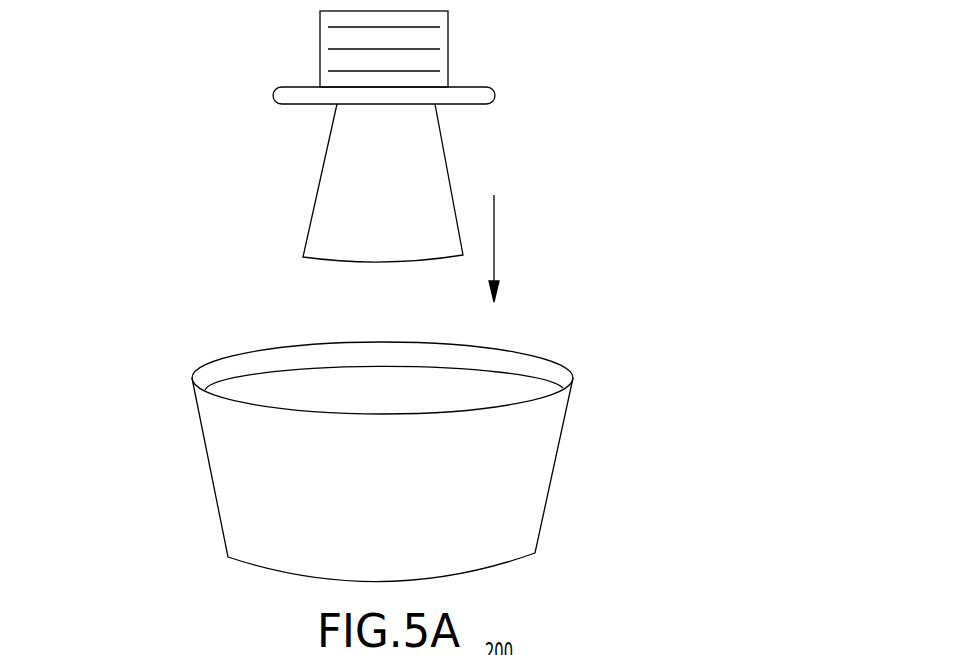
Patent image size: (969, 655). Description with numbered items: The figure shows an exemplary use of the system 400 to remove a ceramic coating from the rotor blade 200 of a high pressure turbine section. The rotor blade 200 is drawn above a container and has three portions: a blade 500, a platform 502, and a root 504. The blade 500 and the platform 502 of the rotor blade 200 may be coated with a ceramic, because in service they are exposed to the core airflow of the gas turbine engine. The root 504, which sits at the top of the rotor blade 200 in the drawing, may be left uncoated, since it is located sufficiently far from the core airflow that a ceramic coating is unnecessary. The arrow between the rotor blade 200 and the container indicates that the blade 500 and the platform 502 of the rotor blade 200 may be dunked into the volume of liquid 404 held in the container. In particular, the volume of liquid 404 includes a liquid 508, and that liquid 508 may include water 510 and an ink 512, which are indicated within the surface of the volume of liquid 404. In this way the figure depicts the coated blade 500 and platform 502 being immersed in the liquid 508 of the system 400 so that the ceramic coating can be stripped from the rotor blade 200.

The system 400 is at (116, 84).
The rotor blade 200 is at (278, 158).
The root 504 is at (448, 33).
The platform 502 is at (495, 95).
The blade 500 is at (447, 170).
The volume of liquid 404 is at (548, 497).
The liquid 508 is at (247, 387).
The water 510 is at (312, 382).
The ink 512 is at (395, 377).